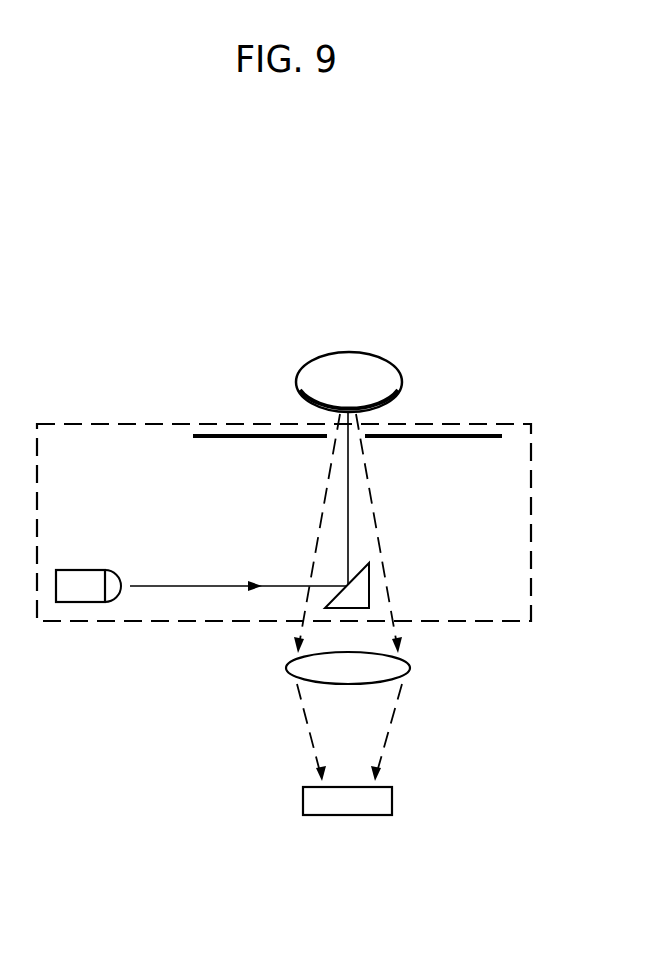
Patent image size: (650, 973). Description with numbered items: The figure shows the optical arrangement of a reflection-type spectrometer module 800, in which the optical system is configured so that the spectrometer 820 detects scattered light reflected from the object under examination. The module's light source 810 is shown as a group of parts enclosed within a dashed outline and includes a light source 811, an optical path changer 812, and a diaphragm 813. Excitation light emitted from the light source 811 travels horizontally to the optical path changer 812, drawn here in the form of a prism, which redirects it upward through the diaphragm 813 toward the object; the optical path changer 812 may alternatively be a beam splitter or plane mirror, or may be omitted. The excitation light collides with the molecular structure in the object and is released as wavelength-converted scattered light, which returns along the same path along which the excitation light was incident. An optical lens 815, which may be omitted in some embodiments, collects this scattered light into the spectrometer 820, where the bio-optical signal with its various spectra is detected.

The spectrometer module 800 is at (464, 291).
The light source 810 is at (474, 422).
The light source 811 is at (84, 604).
The optical path changer 812 is at (371, 587).
The diaphragm 813 is at (472, 438).
The optical lens 815 is at (411, 668).
The spectrometer 820 is at (392, 800).